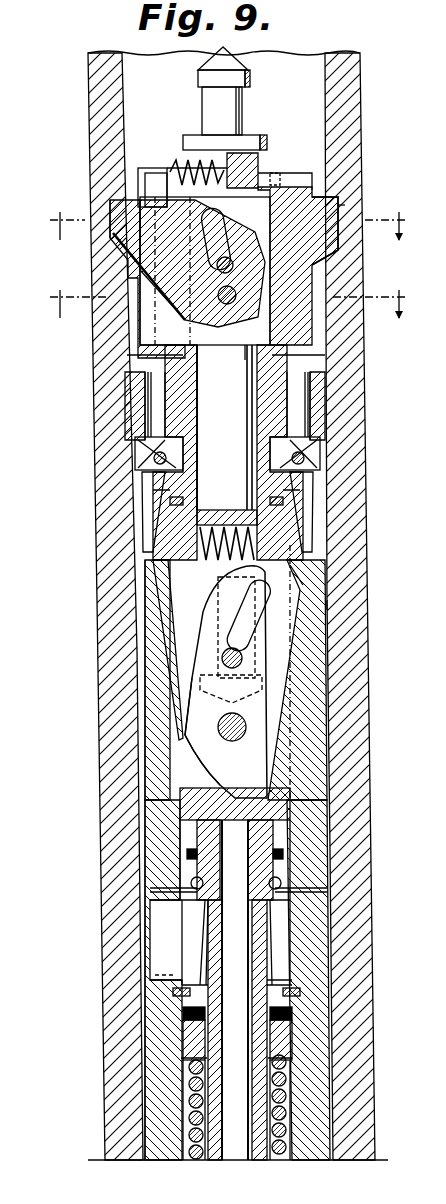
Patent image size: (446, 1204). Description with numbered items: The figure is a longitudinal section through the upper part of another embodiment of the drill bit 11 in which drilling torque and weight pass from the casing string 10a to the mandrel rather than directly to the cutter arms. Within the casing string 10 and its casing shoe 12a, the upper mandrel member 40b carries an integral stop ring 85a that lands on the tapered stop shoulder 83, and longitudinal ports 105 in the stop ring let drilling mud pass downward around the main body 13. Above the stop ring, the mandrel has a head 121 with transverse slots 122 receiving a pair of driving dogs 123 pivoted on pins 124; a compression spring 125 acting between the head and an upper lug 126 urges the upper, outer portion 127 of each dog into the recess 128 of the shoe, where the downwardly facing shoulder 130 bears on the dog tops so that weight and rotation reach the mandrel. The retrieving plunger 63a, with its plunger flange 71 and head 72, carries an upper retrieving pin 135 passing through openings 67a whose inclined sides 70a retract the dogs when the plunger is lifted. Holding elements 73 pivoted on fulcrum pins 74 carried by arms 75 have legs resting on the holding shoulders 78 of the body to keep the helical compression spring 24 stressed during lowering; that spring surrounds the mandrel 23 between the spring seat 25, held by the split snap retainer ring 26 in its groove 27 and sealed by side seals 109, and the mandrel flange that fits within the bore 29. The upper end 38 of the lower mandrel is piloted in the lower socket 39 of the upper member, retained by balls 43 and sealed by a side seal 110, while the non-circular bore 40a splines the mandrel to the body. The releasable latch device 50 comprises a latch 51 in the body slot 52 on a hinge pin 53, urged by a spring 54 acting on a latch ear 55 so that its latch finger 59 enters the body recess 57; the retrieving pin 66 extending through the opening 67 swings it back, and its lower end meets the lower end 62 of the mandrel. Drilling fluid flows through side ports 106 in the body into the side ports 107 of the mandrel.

The casing string 10a is at (362, 113).
The head 72 is at (252, 78).
The plunger flange 71 is at (262, 142).
The openings 67a is at (276, 176).
The compression spring 125 is at (195, 168).
The upper lug 126 is at (160, 170).
The head 121 is at (310, 330).
The slots 122 is at (183, 327).
The inclined sides 70a is at (232, 248).
The driving dogs 123 is at (176, 252).
The upper retrieving pin 135 is at (218, 269).
The pins 124 is at (230, 306).
The upper, outer portion of driving dog 127 is at (112, 200).
The downwardly facing shoulder 130 is at (345, 200).
The recess 128 is at (330, 255).
The drill bit 11 is at (235, 218).
The casing string 10 is at (233, 294).
The stop ring 85a is at (318, 382).
The longitudinal ports or passages 105 is at (148, 402).
The tapered stop shoulder 83 is at (320, 450).
The retrieving plunger 63a is at (245, 420).
The arms 75 is at (140, 464).
The hinge or fulcrum pin 74 is at (302, 458).
The holding shoulders 78 is at (165, 507).
The upper mandrel member 40b is at (292, 489).
The holding elements 73 is at (137, 535).
The latch ear 55 is at (270, 562).
The recess 57 is at (160, 598).
The releasable latch device 50 is at (203, 635).
The helical compression spring 54 is at (237, 634).
The opening 67 is at (255, 667).
The hinge pin 53 is at (247, 720).
The retrieving pin 66 is at (243, 660).
The latch 51 is at (180, 736).
The body slot 52 is at (282, 757).
The latch finger 59 is at (297, 590).
The casing shoe 12a is at (362, 618).
The lower end of mandrel 62 is at (275, 795).
The main body 13 is at (308, 858).
The upper end of mandrel 38 is at (267, 835).
The balls 43 is at (275, 905).
The side ports 107 is at (210, 975).
The side ports 106 is at (312, 935).
The split snap retainer ring 26 is at (290, 982).
The groove 27 is at (183, 995).
The side seals 109 is at (284, 1012).
The spring seat 25 is at (287, 1036).
The helical compression spring 24 is at (200, 1103).
The bore 29 is at (286, 1113).
The mandrel 23 is at (282, 1075).
The lower socket or bore 39 is at (195, 832).
The non-circular bore 40a is at (185, 847).
The side seal 110 is at (193, 862).